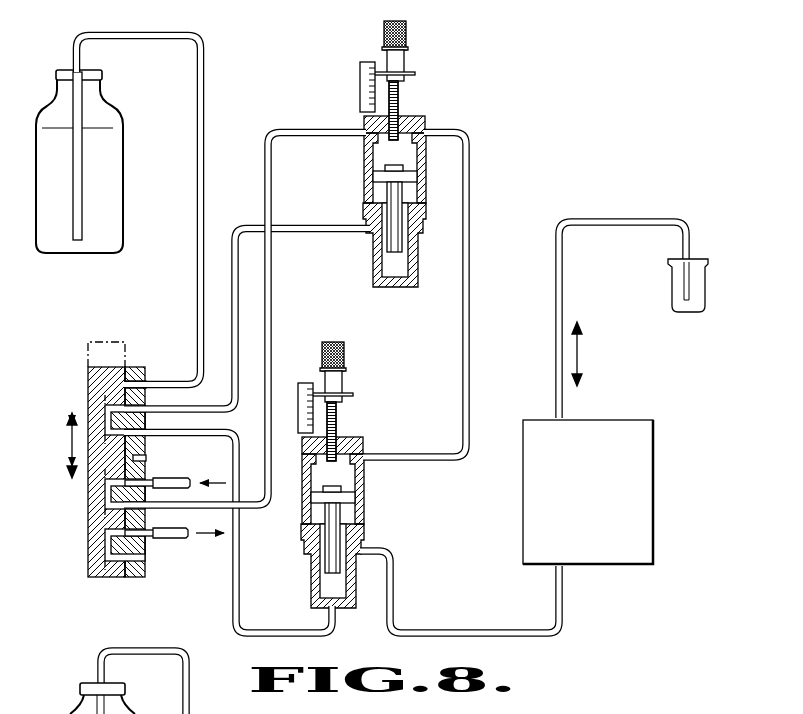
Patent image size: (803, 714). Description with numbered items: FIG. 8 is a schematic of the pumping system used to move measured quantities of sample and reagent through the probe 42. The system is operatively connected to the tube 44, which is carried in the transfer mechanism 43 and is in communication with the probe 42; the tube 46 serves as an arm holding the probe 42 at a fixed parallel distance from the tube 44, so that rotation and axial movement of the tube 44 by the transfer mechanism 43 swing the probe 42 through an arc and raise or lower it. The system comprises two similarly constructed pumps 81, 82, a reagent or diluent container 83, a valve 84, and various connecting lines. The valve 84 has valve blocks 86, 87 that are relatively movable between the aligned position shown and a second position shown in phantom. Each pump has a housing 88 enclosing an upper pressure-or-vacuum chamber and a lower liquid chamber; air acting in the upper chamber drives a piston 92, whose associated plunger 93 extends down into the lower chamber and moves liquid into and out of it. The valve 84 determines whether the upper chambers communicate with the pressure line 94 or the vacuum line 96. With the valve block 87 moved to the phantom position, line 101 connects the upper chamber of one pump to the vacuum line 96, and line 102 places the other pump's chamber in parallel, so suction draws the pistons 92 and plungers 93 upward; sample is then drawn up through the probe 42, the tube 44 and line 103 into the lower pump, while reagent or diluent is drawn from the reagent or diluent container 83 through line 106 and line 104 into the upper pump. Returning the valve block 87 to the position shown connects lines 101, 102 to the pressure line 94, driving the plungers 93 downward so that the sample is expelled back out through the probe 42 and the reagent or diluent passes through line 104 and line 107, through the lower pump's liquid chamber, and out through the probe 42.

The probe 42 is at (684, 240).
The transfer mechanism 43 is at (644, 556).
The tube 44 is at (556, 598).
The tube 46 is at (612, 220).
The pump 81 is at (396, 172).
The pump 82 is at (355, 476).
The reagent or diluent container 83 is at (120, 181).
The valve 84 is at (101, 479).
The valve block 86 is at (133, 579).
The valve block 87 is at (94, 579).
The housing 88 is at (372, 178).
The piston 92 is at (419, 175).
The plunger 93 is at (406, 212).
The pressure line 94 is at (162, 478).
The vacuum line 96 is at (172, 541).
The line 101 is at (270, 313).
The line 102 is at (471, 293).
The line 103 is at (394, 607).
The line 104 is at (252, 229).
The line 106 is at (206, 115).
The line 107 is at (240, 587).